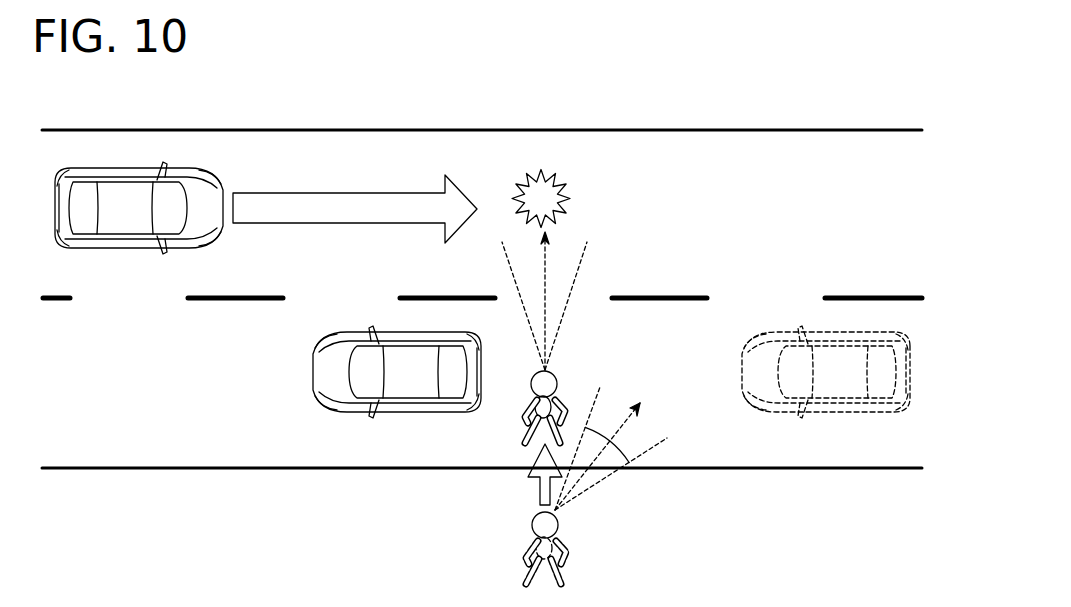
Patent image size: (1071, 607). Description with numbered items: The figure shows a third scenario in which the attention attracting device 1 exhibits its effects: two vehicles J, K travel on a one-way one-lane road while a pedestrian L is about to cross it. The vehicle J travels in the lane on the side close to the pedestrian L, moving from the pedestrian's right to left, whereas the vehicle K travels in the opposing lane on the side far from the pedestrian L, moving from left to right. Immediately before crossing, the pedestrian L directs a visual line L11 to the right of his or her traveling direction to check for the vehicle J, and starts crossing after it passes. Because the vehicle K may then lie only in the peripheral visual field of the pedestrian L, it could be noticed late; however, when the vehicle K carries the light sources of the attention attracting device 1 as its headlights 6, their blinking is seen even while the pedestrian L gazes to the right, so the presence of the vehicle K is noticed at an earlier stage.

The headlights 6 is at (213, 234).
The attention attracting device 1 is at (139, 208).
The vehicle K is at (139, 208).
The vehicle J is at (611, 372).
The pedestrian L is at (536, 386).
The visual line L11 is at (602, 452).